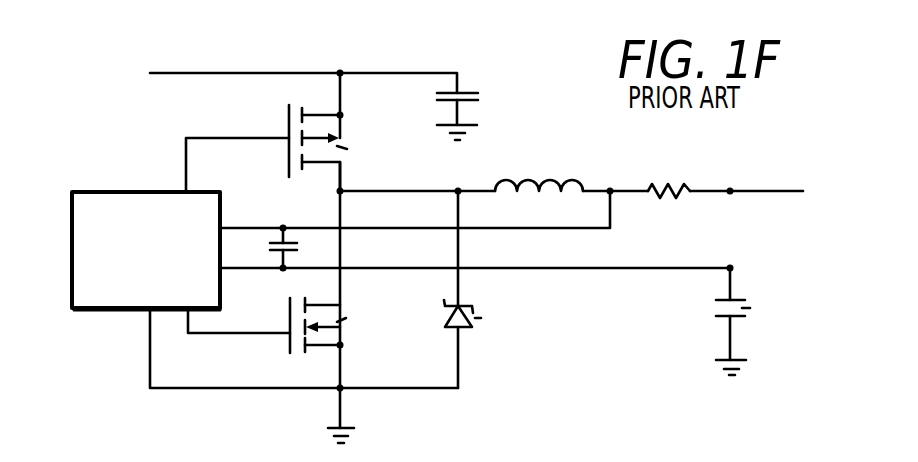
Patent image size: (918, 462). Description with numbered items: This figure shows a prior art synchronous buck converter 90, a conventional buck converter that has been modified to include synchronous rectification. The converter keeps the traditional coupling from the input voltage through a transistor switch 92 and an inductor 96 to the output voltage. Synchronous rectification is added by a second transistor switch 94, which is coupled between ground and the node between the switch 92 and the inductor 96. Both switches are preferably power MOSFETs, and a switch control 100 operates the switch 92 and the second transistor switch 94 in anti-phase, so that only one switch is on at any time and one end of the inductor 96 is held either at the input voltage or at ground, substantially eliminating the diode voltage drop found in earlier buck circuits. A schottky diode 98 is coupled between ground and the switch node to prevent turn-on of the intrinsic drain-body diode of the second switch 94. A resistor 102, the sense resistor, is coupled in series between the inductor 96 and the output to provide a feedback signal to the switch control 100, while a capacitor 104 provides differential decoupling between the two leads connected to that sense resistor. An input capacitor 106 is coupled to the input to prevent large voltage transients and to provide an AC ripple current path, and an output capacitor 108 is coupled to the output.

The synchronous buck converter 90 is at (746, 156).
The transistor switch 92 is at (287, 118).
The second transistor switch 94 is at (284, 340).
The inductor 96 is at (565, 192).
The schottky diode 98 is at (449, 318).
The switch control 100 is at (112, 192).
The resistor 102 is at (681, 197).
The capacitor 104 is at (270, 246).
The input capacitor 106 is at (457, 88).
The output capacitor 108 is at (742, 292).